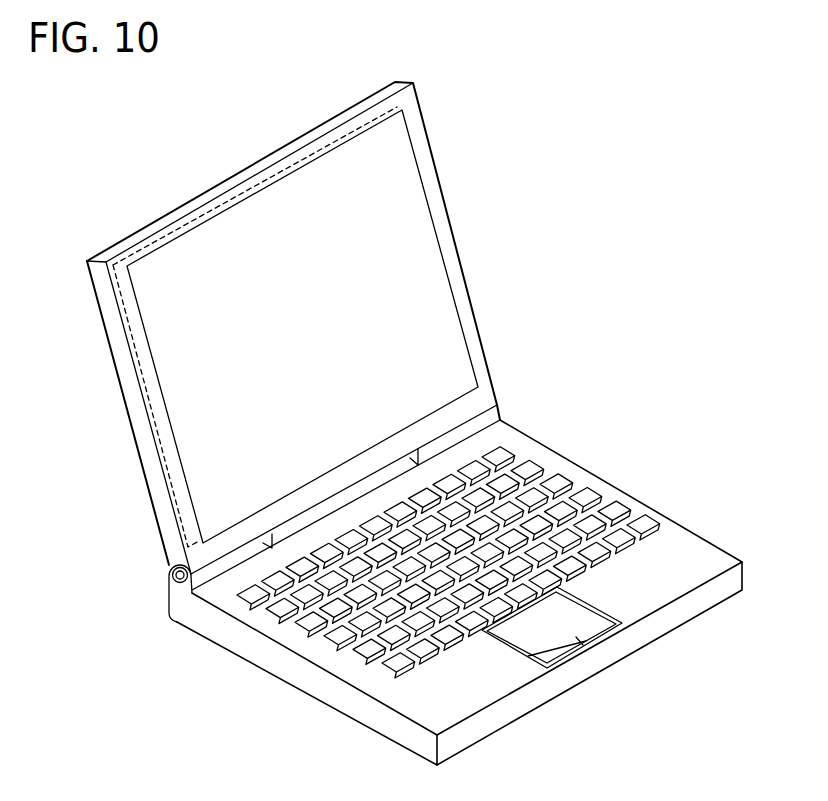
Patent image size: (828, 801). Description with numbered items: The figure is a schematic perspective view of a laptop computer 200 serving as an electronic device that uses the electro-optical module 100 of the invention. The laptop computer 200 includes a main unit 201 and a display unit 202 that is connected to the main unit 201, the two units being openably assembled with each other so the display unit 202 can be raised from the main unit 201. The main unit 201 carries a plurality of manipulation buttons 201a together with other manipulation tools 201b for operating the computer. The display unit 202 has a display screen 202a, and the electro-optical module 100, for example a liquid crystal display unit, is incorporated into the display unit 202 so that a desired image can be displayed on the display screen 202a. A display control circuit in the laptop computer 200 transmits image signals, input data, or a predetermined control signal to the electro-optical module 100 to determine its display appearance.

The electro-optical module 100 is at (211, 207).
The laptop computer 200 is at (602, 149).
The main unit 201 is at (658, 512).
The manipulation buttons 201a is at (530, 462).
The other manipulation tools 201b is at (580, 617).
The display unit 202 is at (146, 452).
The display screen 202a is at (439, 318).